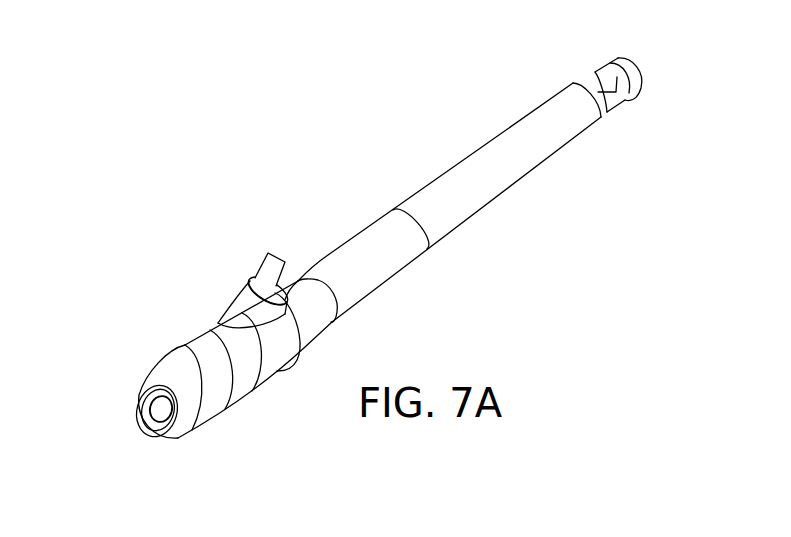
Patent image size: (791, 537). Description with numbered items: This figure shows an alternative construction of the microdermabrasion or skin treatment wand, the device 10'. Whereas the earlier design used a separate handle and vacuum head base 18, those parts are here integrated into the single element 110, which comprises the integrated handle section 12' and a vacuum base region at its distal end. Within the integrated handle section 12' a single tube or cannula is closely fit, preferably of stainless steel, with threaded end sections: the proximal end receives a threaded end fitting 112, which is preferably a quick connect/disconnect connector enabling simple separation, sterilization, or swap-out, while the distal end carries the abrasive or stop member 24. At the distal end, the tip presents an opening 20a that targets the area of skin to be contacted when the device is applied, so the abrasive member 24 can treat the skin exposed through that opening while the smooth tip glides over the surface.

The device 10' is at (358, 261).
The integrated handle section 12' is at (449, 192).
The vacuum head base 18 is at (258, 386).
The opening 20a is at (163, 404).
The abrasive member 24 is at (152, 430).
The integrated handle and vacuum head base element 110 is at (295, 280).
The threaded end fitting 112 is at (615, 105).